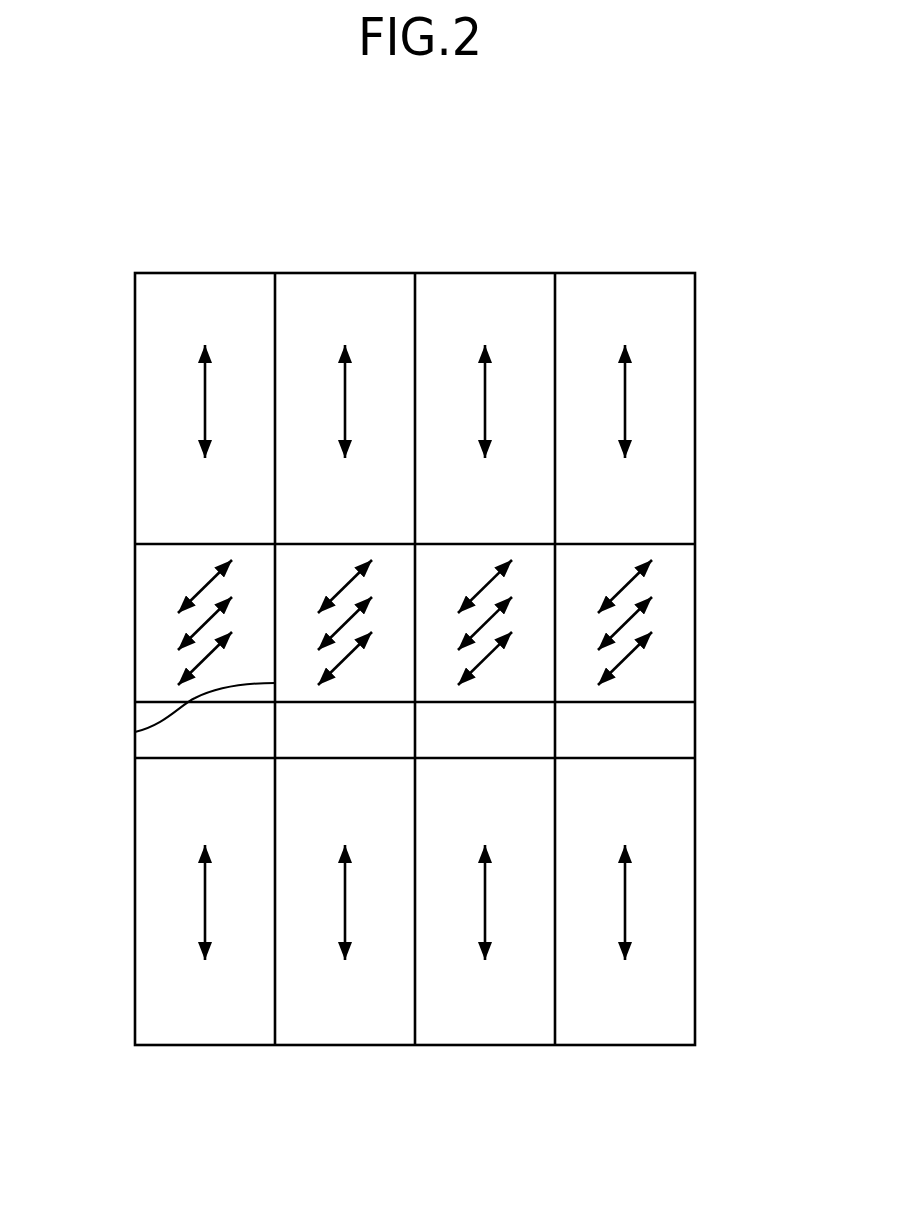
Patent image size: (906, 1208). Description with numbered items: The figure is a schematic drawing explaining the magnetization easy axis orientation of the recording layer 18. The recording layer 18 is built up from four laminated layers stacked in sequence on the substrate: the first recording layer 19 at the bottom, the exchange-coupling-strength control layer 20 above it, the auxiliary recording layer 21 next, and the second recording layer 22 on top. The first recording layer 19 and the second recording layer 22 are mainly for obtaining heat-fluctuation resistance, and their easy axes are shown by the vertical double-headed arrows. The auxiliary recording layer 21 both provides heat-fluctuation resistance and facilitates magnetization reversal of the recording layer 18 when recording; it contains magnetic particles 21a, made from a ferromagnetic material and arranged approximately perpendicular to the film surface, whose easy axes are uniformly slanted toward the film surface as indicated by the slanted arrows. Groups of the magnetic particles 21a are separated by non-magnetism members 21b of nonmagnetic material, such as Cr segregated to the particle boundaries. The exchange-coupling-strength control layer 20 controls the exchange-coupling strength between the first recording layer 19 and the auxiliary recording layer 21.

The recording layer 18 is at (137, 205).
The first recording layer 19 is at (695, 895).
The exchange-coupling-strength control layer 20 is at (695, 729).
The auxiliary recording layer 21 is at (695, 621).
The magnetic particles 21a is at (153, 620).
The non-magnetism members 21b is at (135, 732).
The second recording layer 22 is at (695, 403).